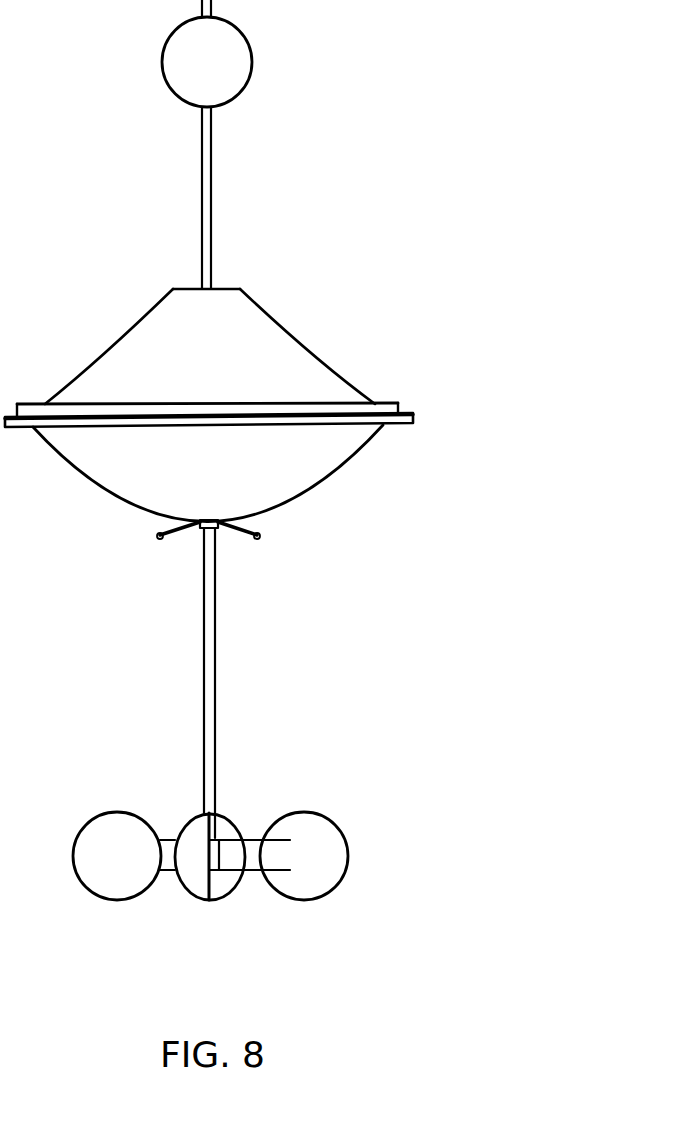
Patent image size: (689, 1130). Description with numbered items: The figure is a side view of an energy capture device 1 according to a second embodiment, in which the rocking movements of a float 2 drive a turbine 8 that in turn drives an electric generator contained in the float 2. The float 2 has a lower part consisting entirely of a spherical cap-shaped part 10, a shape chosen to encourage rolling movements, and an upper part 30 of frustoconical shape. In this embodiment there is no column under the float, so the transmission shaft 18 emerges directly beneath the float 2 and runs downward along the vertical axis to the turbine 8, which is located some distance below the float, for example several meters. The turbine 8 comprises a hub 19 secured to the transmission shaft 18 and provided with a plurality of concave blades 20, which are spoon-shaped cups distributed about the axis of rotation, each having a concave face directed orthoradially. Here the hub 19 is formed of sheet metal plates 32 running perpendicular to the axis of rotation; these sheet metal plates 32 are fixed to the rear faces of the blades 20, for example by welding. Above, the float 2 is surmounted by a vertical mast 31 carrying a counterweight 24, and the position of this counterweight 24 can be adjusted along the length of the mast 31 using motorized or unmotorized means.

The device 1 is at (358, 182).
The float 2 is at (436, 303).
The turbine 8 is at (397, 780).
The spherical cap-shaped part 10 is at (345, 452).
The transmission shaft 18 is at (208, 637).
The hub 19 is at (225, 888).
The concave blades 20 is at (179, 807).
The counterweight 24 is at (180, 44).
The upper part 30 is at (142, 353).
The vertical mast 31 is at (205, 183).
The sheet metal plates 32 is at (168, 838).